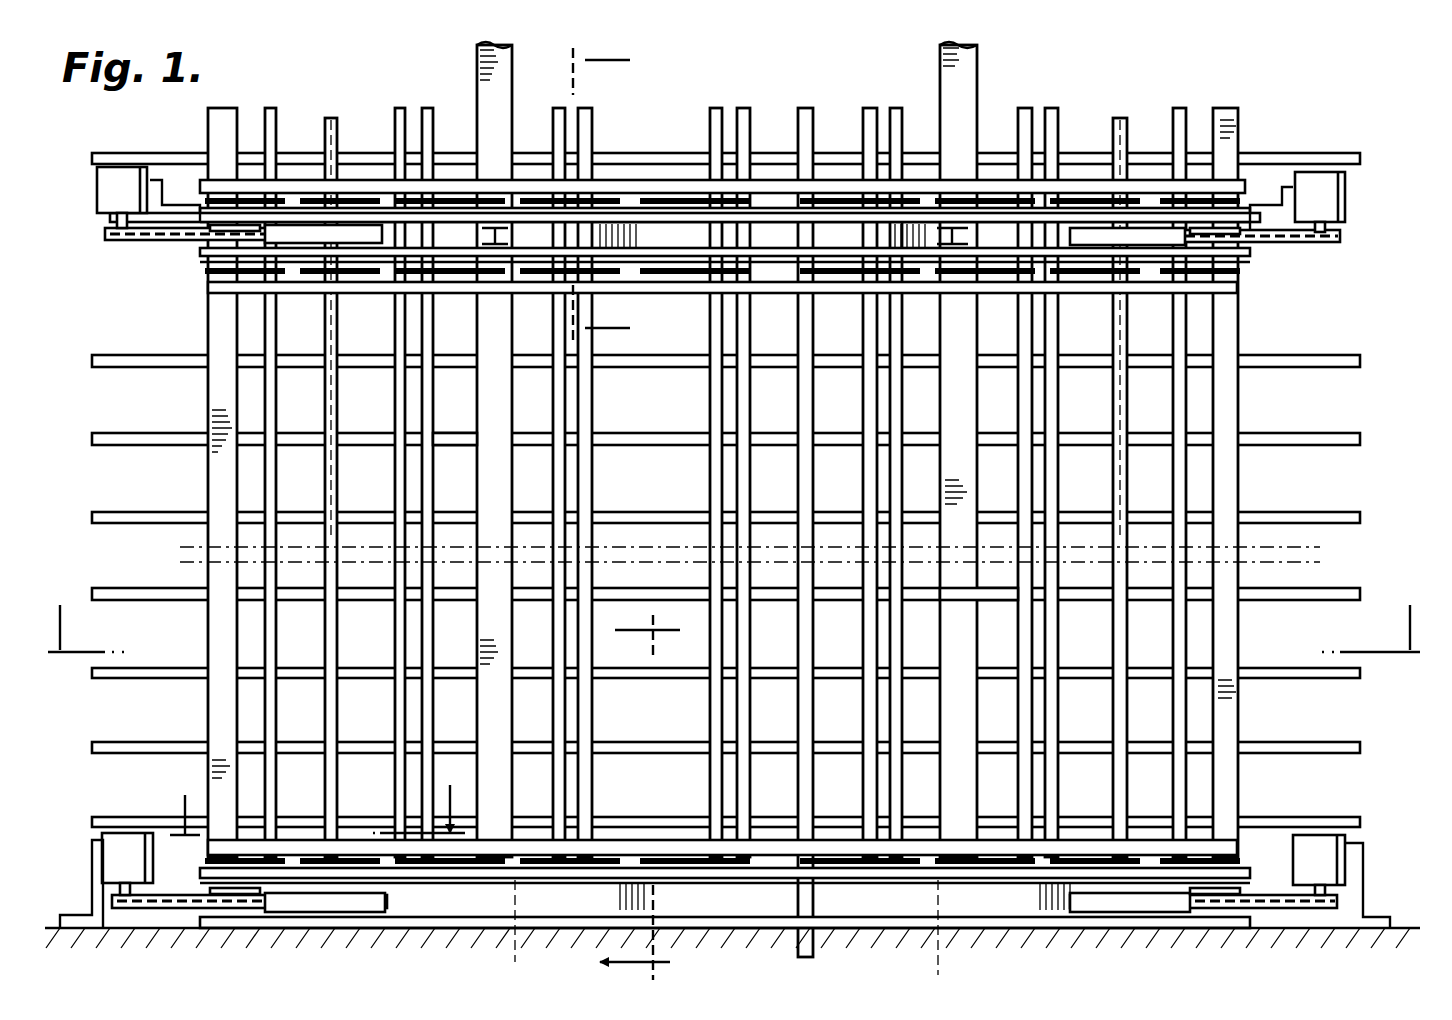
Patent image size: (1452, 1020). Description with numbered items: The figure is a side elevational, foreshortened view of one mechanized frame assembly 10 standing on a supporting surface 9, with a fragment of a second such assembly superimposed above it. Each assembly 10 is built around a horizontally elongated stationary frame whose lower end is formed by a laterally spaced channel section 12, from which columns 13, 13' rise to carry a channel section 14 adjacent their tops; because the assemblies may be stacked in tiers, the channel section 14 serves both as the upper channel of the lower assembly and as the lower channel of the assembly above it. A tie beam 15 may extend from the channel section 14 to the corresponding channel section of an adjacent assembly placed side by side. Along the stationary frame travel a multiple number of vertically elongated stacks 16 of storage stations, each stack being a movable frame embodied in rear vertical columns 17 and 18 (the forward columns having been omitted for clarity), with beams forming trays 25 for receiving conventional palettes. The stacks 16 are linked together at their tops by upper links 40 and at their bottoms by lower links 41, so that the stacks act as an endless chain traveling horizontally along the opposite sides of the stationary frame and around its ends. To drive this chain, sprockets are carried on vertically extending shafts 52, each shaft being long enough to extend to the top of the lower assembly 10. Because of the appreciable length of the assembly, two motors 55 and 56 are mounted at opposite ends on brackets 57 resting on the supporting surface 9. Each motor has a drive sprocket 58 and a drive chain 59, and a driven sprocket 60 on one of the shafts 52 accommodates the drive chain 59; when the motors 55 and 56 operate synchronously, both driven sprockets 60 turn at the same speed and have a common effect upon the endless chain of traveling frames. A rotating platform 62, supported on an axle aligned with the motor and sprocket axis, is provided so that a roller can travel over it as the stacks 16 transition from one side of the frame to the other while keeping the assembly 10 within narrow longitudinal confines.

The supporting surface 9 is at (532, 928).
The mechanized frame assembly 10 is at (1255, 88).
The channel section 12 is at (895, 915).
The column 13 is at (979, 612).
The column 13' is at (461, 463).
The channel section 14 is at (642, 225).
The tie beam 15 is at (520, 240).
The stack 16 is at (368, 140).
The rear vertical column 17 is at (1230, 483).
The rear vertical column 18 is at (272, 722).
The tray 25 is at (1292, 160).
The upper link 40 is at (246, 268).
The lower link 41 is at (415, 195).
The shaft 52 is at (330, 130).
The motor 55 is at (108, 188).
The motor 56 is at (1322, 192).
The bracket 57 is at (160, 190).
The drive sprocket 58 is at (115, 240).
The drive chain 59 is at (178, 240).
The driven sprocket 60 is at (328, 240).
The rotating platform 62 is at (236, 195).